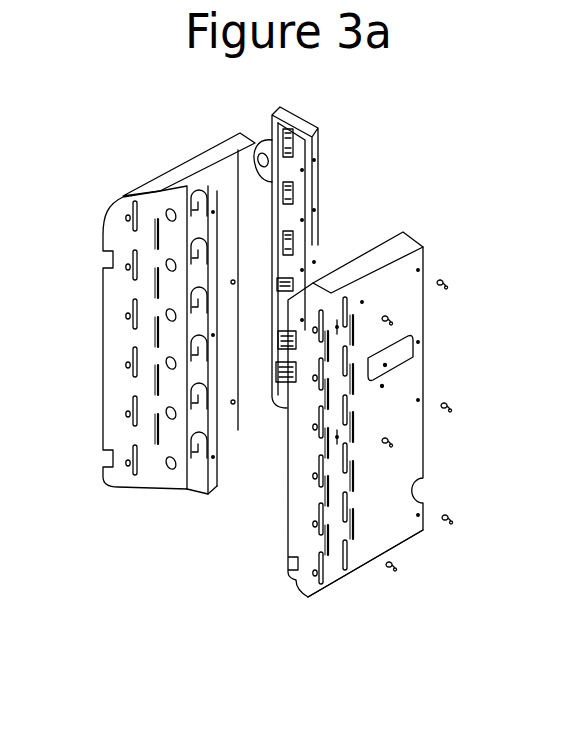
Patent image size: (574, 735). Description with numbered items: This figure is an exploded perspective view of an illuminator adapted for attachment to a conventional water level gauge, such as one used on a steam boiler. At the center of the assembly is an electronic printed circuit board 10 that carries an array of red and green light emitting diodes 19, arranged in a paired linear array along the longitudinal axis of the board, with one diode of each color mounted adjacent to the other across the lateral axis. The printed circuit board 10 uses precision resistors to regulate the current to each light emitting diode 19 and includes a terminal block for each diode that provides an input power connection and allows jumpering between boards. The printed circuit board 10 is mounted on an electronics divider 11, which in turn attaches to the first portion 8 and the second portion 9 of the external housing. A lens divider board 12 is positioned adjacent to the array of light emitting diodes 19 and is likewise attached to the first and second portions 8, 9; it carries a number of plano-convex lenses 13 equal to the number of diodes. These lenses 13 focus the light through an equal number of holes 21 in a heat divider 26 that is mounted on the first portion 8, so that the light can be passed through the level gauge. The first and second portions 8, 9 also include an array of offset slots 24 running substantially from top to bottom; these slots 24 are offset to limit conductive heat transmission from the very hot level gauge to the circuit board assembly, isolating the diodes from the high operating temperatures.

The first portion 8 is at (210, 158).
The second portion 9 is at (412, 303).
The electronic printed circuit board 10 is at (292, 218).
The electronics divider 11 is at (315, 172).
The lens divider board 12 is at (215, 390).
The plano-convex lenses 13 is at (198, 445).
The light emitting diodes 19 is at (293, 143).
The holes 21 is at (168, 415).
The offset slots 24 is at (365, 579).
The heat divider 26 is at (174, 292).